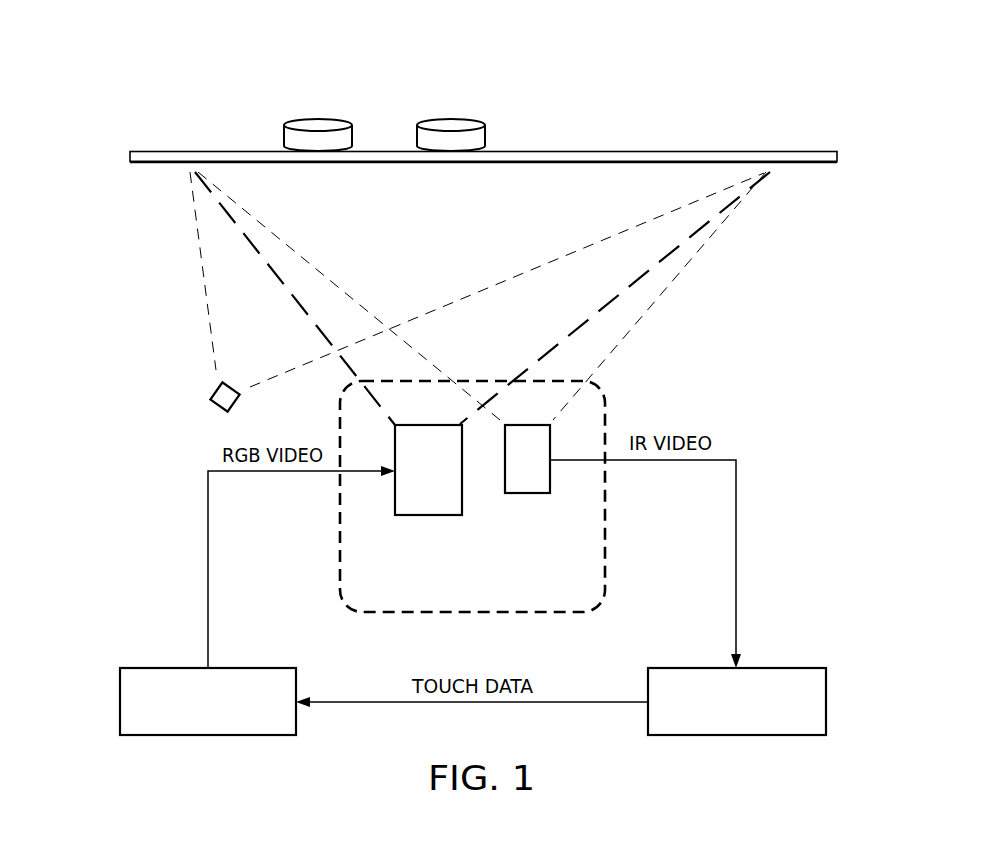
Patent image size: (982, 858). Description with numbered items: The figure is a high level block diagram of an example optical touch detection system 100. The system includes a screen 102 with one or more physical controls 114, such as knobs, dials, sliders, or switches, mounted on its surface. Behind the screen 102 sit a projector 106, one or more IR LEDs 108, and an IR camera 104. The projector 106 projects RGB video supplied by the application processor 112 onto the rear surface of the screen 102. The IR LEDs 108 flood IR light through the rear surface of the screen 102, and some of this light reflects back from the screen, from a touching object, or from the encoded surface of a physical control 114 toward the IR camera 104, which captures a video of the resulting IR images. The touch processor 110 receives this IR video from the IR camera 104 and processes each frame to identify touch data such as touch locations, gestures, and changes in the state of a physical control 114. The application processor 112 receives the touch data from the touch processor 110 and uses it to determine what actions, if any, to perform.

The optical touch detection system 100 is at (210, 97).
The screen 102 is at (614, 151).
The IR camera 104 is at (525, 495).
The projector 106 is at (428, 517).
The IR LED 108 is at (208, 392).
The touch processor 110 is at (748, 737).
The application processor 112 is at (197, 737).
The physical control 114 is at (483, 99).